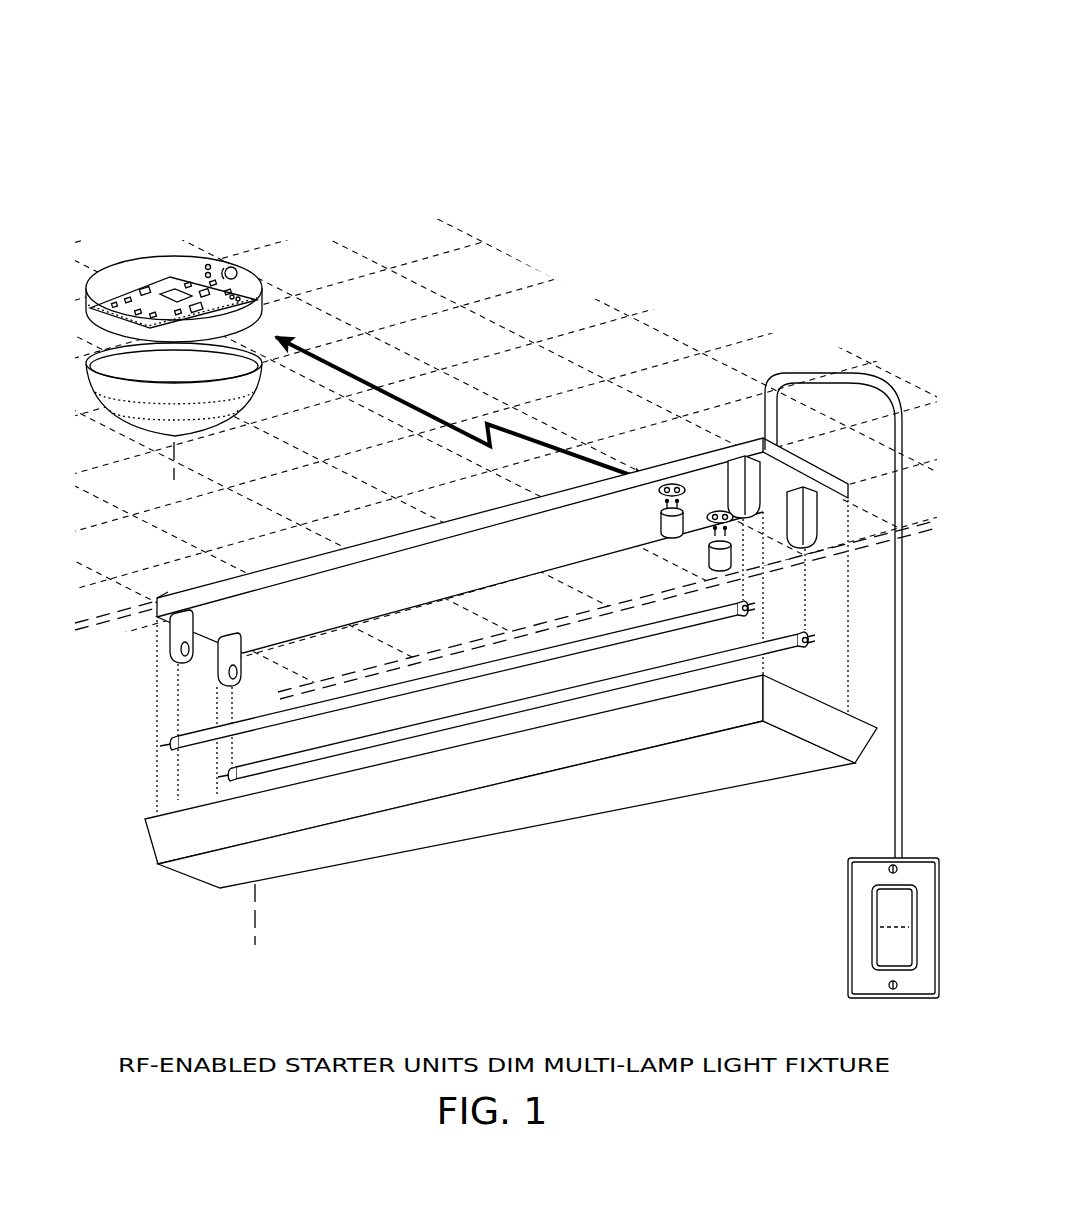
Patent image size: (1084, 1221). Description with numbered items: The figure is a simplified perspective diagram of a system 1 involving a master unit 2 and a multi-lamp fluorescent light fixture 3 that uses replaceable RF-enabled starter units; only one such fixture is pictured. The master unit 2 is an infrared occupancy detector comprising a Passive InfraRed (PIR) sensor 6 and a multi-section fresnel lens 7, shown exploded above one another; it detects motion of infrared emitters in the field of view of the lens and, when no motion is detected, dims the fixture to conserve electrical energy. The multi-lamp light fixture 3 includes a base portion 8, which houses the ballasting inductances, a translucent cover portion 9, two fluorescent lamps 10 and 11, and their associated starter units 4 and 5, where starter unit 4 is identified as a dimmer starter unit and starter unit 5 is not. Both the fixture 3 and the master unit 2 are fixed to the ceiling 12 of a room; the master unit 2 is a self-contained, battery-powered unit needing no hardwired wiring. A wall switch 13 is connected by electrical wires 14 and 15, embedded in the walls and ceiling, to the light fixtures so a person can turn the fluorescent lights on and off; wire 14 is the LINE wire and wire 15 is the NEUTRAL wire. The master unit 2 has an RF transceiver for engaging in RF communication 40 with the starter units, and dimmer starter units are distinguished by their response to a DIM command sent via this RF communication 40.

The system 1 is at (651, 43).
The master unit 2 is at (180, 245).
The multi-lamp fluorescent light fixture 3 is at (147, 796).
The dimmer starter unit 4 is at (690, 514).
The starter unit 5 is at (736, 551).
The Passive InfraRed (PIR) sensor 6 is at (170, 290).
The multi-section fresnel lens 7 is at (158, 399).
The base portion 8 is at (397, 581).
The translucent cover portion 9 is at (378, 841).
The fluorescent lamp 10 is at (697, 630).
The fluorescent lamp 11 is at (775, 652).
The ceiling 12 is at (300, 506).
The wall switch 13 is at (838, 929).
The LINE wire 14 is at (900, 785).
The NEUTRAL wire 15 is at (903, 822).
The RF communication 40 is at (445, 420).